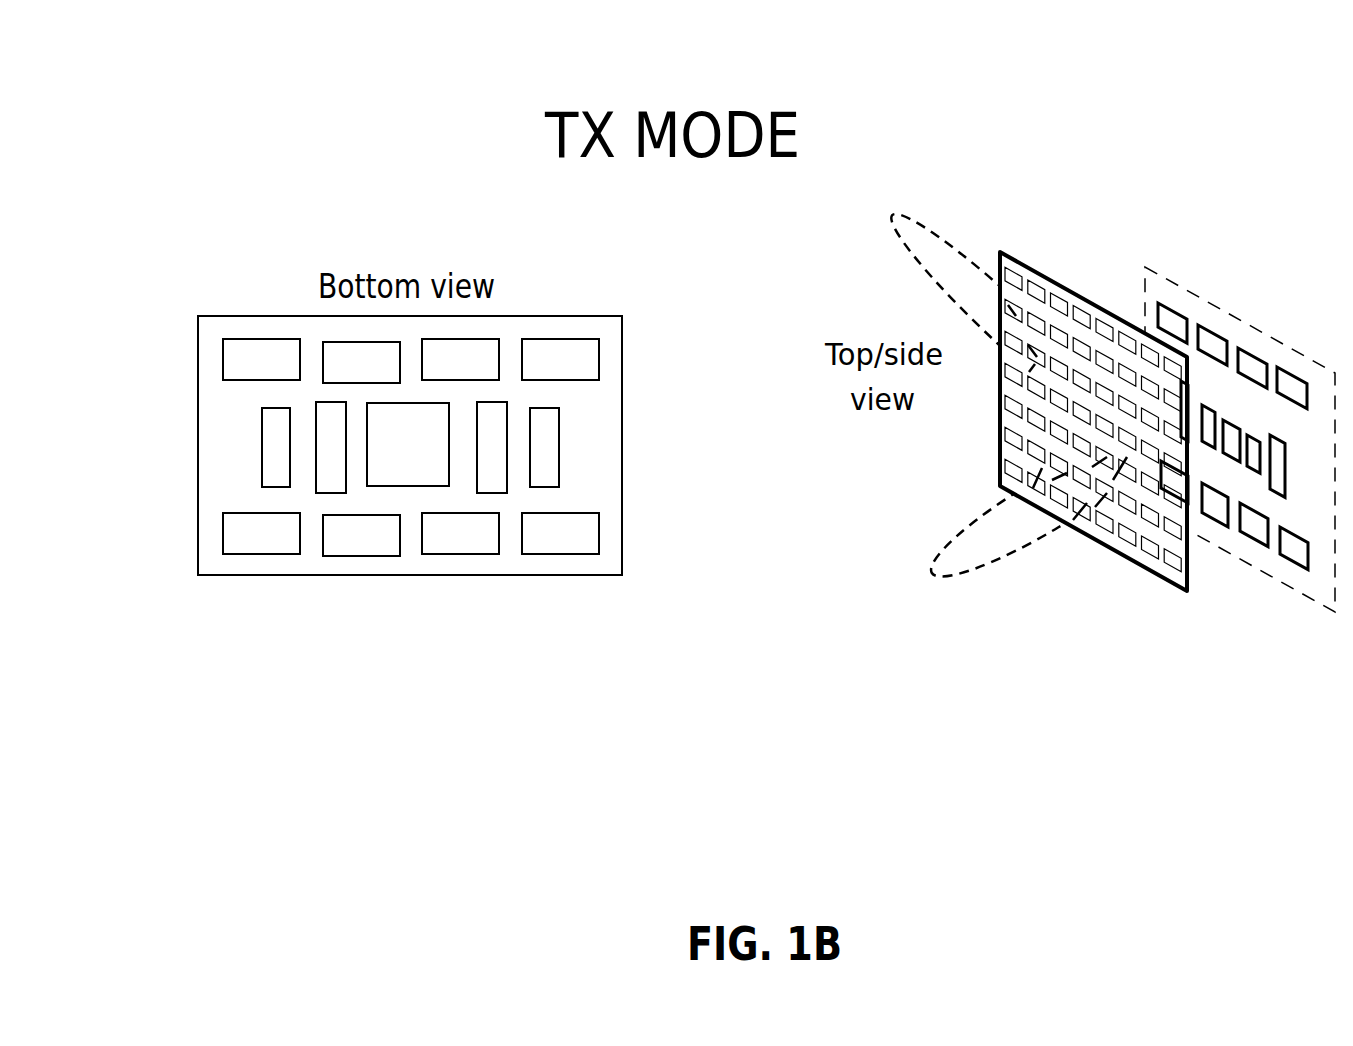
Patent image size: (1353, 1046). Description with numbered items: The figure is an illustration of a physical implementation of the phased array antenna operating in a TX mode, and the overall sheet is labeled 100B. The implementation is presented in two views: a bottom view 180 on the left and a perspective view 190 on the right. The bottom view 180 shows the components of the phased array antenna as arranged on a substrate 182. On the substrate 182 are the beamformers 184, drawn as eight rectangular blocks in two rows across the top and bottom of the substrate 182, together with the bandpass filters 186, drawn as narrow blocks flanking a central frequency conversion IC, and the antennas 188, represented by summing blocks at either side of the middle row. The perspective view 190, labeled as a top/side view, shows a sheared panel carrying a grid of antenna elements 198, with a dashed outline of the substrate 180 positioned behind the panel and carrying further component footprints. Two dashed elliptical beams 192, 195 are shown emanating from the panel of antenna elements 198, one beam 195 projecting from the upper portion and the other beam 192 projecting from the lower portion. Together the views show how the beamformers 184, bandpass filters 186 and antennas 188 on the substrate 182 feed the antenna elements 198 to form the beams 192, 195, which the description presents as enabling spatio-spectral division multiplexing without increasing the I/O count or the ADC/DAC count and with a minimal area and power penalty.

The antenna module in TX mode 100B is at (158, 88).
The bottom view 180 is at (198, 352).
The substrate 182 is at (215, 422).
The beamformers 184 is at (248, 557).
The bandpass filters 186 is at (398, 475).
The antennas 188 is at (560, 457).
The perspective view 190 is at (1156, 450).
The beam 192 is at (979, 575).
The beam 195 is at (922, 217).
The antenna elements 198 is at (1147, 563).